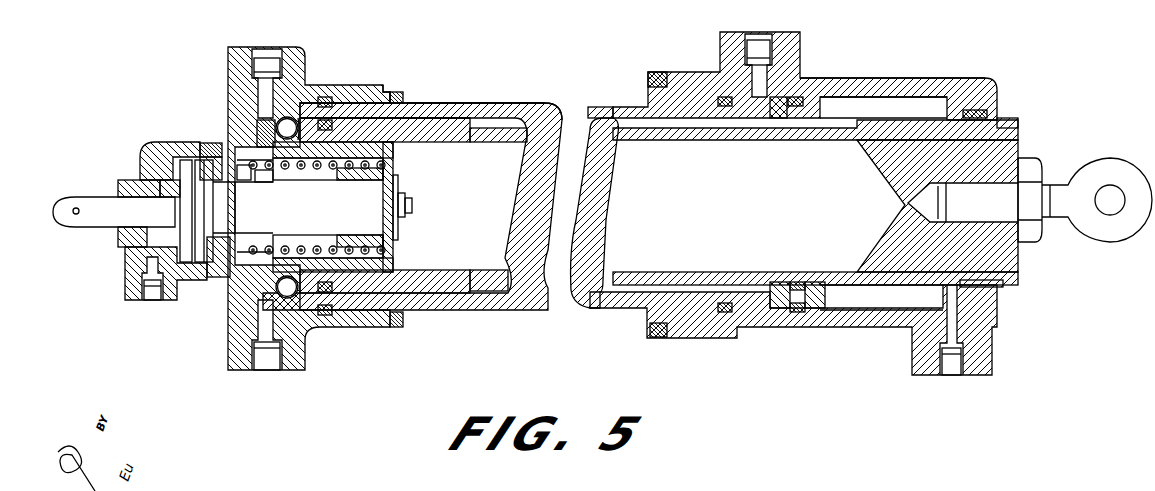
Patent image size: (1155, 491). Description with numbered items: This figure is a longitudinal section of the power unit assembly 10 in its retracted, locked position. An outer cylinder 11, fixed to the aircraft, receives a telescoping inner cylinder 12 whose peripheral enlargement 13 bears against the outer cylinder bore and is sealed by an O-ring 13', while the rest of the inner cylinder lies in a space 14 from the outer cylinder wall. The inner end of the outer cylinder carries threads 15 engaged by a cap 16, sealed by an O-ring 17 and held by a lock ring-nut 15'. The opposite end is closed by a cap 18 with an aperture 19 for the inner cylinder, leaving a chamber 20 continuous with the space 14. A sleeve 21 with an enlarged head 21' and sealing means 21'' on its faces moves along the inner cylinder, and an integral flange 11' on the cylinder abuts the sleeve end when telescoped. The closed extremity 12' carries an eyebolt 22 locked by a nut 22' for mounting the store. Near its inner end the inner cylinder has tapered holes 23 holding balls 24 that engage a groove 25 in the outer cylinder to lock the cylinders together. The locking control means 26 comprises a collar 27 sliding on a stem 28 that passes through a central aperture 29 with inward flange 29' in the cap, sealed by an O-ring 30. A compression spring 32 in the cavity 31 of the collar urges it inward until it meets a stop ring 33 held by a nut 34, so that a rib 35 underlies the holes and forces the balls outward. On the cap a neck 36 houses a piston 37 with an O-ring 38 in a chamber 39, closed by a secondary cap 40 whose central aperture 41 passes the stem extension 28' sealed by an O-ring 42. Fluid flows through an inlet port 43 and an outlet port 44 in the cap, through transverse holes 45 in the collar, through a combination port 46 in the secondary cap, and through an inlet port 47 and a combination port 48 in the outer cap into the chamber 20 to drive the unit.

The power unit assembly 10 is at (510, 104).
The outer cylinder 11 is at (702, 203).
The integral flange 11' is at (1003, 192).
The inner cylinder 12 is at (744, 205).
The closed extremity 12' is at (937, 165).
The peripheral enlargement 13 is at (386, 208).
The O-ring 13' is at (385, 92).
The space 14 is at (510, 127).
The threads 15 is at (398, 84).
The lock ring-nut 15' is at (415, 203).
The cap 16 is at (240, 100).
The O-ring 17 is at (322, 96).
The cap 18 is at (872, 86).
The aperture 19 is at (990, 112).
The chamber 20 is at (837, 100).
The sleeve 21 is at (818, 222).
The enlarged head 21' is at (795, 222).
The sealing means 21'' is at (759, 227).
The eyebolt 22 is at (1097, 190).
The nut 22' is at (1040, 190).
The holes 23 is at (302, 128).
The ball 24 is at (290, 117).
The groove 25 is at (288, 298).
The locking control means 26 is at (398, 162).
The collar 27 is at (378, 180).
The stem 28 is at (323, 215).
The extension 28' is at (114, 201).
The central aperture 29 is at (320, 208).
The inward flange 29' is at (261, 187).
The O-ring 30 is at (244, 186).
The cavity 31 is at (352, 173).
The compression spring 32 is at (302, 172).
The stop ring 33 is at (400, 181).
The nut 34 is at (412, 204).
The rib 35 is at (266, 142).
The neck 36 is at (222, 150).
The piston 37 is at (176, 165).
The O-ring 38 is at (196, 168).
The chamber 39 is at (142, 180).
The secondary cap 40 is at (140, 192).
The central aperture 41 is at (122, 230).
The O-ring 42 is at (124, 243).
The fluid inlet port 43 is at (270, 363).
The fluid outlet port 44 is at (274, 60).
The transverse holes 45 is at (340, 252).
The combination inlet and outlet port 46 is at (156, 292).
The fluid inlet port 47 is at (956, 366).
The combination inlet and outlet port 48 is at (760, 45).